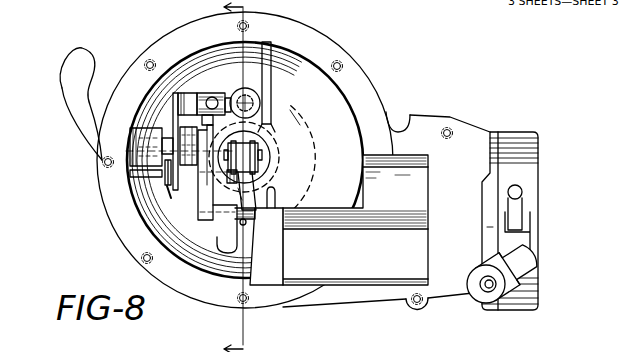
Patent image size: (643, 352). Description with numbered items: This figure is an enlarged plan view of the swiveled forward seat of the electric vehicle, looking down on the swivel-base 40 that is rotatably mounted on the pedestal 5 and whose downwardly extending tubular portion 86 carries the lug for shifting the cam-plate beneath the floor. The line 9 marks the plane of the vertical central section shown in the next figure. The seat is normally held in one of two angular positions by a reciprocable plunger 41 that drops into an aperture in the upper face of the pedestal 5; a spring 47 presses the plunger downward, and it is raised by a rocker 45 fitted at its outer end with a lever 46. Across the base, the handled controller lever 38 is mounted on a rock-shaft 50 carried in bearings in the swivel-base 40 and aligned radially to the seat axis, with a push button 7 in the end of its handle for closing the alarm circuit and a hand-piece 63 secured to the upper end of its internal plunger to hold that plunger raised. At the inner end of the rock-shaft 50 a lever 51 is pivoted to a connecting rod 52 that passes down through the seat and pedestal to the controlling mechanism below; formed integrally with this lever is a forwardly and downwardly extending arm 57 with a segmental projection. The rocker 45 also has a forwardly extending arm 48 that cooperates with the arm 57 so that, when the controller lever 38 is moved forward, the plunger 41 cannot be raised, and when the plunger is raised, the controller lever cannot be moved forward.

The swivel-base 40 is at (107, 188).
The section line 9 is at (222, 176).
The tubular portion 86 is at (285, 170).
The lever 46 is at (62, 86).
The rock-shaft 50 is at (366, 213).
The controller lever 38 is at (522, 244).
The hand-piece 63 is at (522, 196).
The push button 7 is at (486, 294).
The spring 47 is at (175, 113).
The rocker 45 is at (200, 95).
The reciprocable plunger 41 is at (261, 100).
The connecting rod 52 is at (262, 155).
The pedestal 5 is at (300, 115).
The lever 51 is at (200, 190).
The forwardly extending arm 48 is at (240, 192).
The arm 57 is at (230, 242).